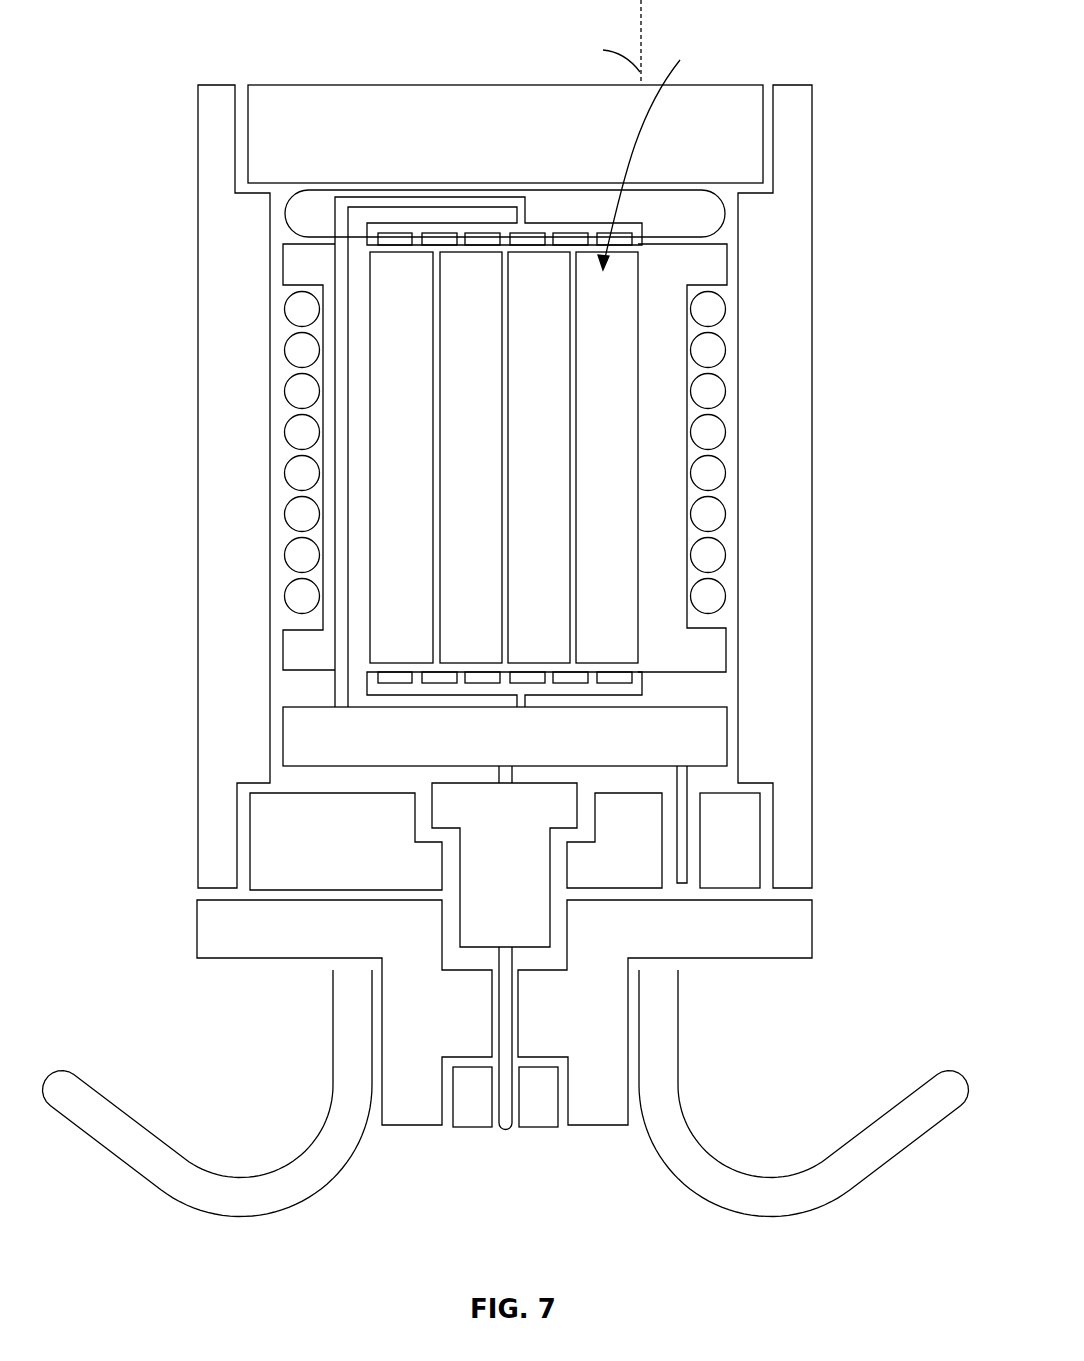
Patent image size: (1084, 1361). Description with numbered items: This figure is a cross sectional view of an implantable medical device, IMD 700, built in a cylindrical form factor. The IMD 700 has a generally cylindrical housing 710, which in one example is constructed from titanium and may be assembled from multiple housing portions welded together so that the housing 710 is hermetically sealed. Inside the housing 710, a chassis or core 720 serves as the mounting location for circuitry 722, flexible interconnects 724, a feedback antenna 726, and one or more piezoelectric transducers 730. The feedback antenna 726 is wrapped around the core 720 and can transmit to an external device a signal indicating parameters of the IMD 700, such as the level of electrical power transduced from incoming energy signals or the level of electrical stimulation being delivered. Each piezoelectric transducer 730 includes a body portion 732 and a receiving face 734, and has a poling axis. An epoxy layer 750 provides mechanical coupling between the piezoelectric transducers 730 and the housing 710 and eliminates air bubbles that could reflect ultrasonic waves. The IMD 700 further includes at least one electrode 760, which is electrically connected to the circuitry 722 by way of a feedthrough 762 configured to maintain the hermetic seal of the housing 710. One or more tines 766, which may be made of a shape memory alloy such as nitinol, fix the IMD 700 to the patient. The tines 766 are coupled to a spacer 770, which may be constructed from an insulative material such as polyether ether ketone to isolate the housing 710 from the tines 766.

The IMD 700 is at (137, 84).
The housing 710 is at (812, 430).
The core 720 is at (727, 655).
The circuitry 722 is at (727, 742).
The flexible interconnects 724 is at (333, 692).
The feedback antenna 726 is at (728, 515).
The piezoelectric transducer 730 is at (638, 313).
The body portion 732 is at (607, 383).
The receiving face 734 is at (652, 150).
The epoxy layer 750 is at (725, 213).
The electrode 760 is at (467, 1128).
The feedthrough 762 is at (503, 1128).
The tines 766 is at (756, 1214).
The spacer 770 is at (812, 930).